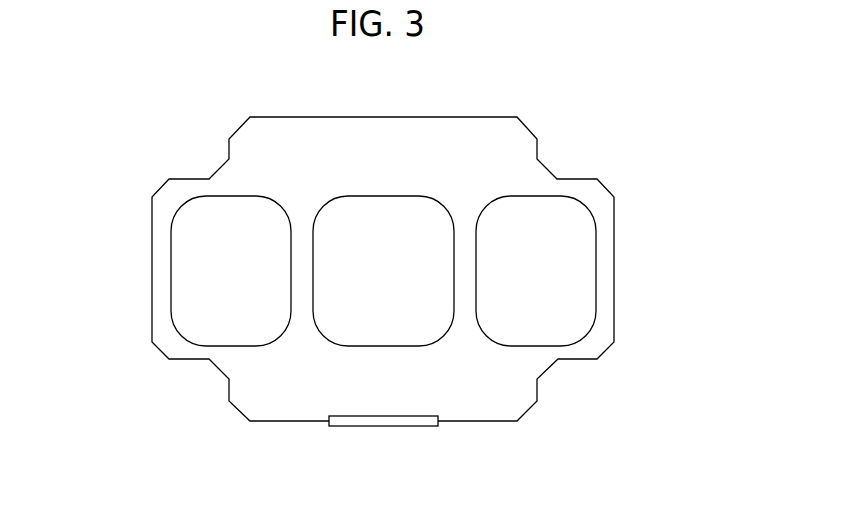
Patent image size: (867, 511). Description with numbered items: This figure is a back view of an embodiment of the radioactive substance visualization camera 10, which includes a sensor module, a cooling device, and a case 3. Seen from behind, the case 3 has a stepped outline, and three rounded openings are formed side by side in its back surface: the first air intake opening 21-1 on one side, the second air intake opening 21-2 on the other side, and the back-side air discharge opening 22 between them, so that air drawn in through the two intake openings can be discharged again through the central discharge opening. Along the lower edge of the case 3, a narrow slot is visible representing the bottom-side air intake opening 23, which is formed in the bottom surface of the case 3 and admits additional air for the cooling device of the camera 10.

The radioactive substance visualization camera 10 is at (373, 265).
The case 3 is at (152, 293).
The first air intake opening 21-1 is at (597, 269).
The second air intake opening 21-2 is at (170, 237).
The back-side air discharge opening 22 is at (385, 195).
The bottom-side air intake opening 23 is at (398, 427).